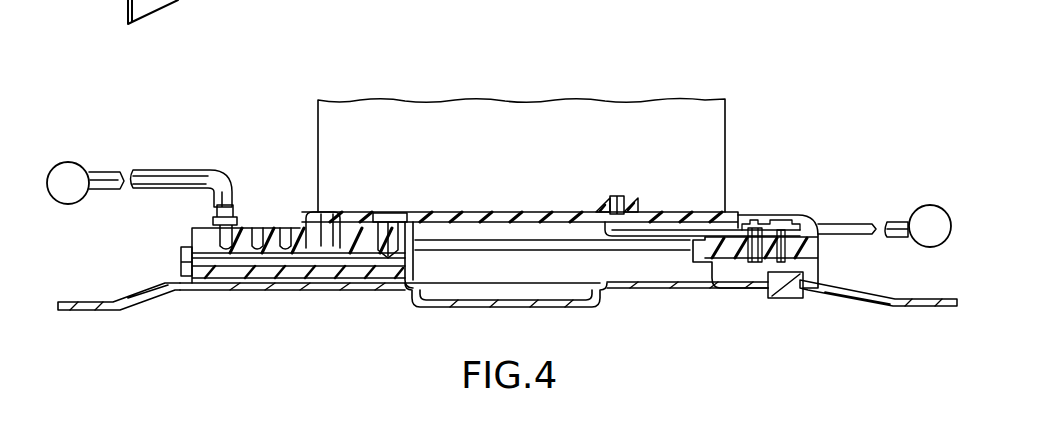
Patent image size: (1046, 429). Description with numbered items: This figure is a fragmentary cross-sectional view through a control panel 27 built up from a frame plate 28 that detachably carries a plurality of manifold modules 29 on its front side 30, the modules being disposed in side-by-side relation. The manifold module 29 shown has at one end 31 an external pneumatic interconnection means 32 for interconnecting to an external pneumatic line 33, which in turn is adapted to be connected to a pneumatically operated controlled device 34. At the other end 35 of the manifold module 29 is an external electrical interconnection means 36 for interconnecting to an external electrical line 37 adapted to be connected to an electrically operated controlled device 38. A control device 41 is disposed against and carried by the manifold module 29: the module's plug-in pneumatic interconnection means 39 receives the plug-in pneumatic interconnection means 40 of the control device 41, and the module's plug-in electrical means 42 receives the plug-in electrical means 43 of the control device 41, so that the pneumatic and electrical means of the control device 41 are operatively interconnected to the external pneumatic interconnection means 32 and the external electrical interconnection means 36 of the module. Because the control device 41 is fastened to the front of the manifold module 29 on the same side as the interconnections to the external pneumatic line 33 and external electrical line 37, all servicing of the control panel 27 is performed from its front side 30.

The control panel 27 is at (806, 136).
The frame plate 28 is at (178, 293).
The manifold module 29 is at (680, 213).
The front side 30 is at (178, 285).
The one end 31 is at (205, 240).
The external pneumatic interconnection means 32 is at (273, 214).
The external pneumatic line 33 is at (170, 170).
The pneumatically operated controlled device 34 is at (77, 161).
The other end 35 is at (803, 218).
The external electrical interconnection means 36 is at (782, 212).
The external electrical line 37 is at (852, 223).
The electrically operated controlled device 38 is at (932, 205).
The plug-in pneumatic interconnection means 39 is at (366, 212).
The plug-in pneumatic interconnection means 40 is at (400, 252).
The control device 41 is at (645, 118).
The plug-in electrical means 42 is at (635, 205).
The plug-in electrical means 43 is at (603, 205).